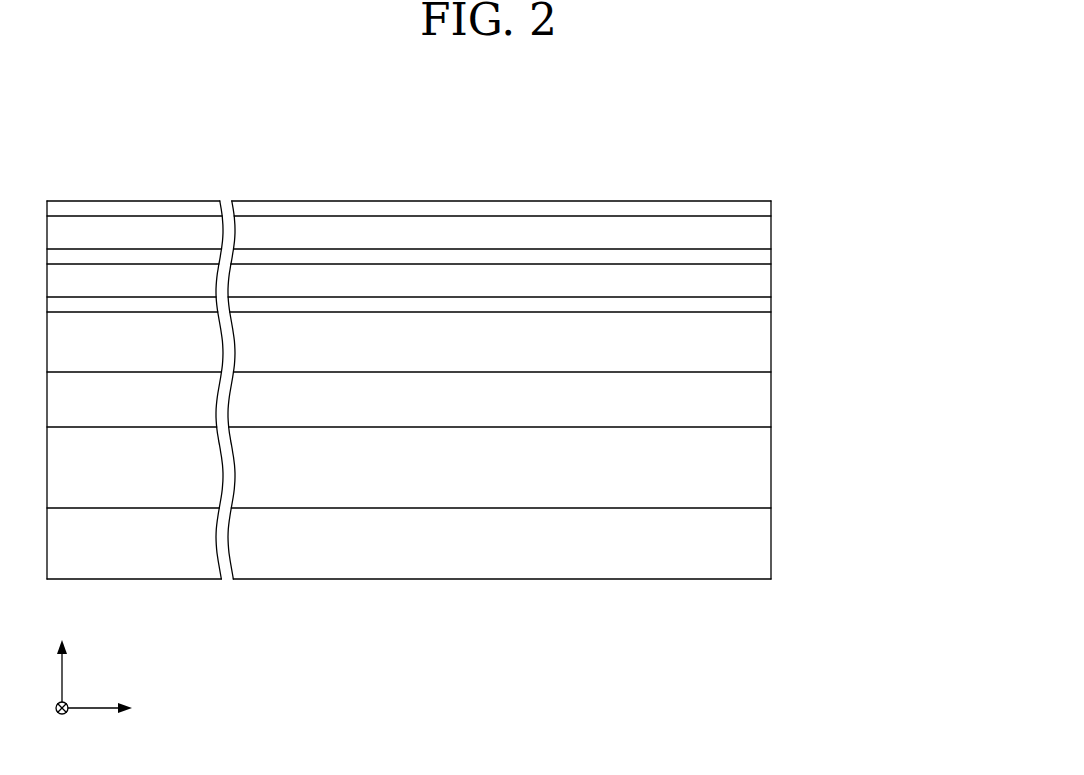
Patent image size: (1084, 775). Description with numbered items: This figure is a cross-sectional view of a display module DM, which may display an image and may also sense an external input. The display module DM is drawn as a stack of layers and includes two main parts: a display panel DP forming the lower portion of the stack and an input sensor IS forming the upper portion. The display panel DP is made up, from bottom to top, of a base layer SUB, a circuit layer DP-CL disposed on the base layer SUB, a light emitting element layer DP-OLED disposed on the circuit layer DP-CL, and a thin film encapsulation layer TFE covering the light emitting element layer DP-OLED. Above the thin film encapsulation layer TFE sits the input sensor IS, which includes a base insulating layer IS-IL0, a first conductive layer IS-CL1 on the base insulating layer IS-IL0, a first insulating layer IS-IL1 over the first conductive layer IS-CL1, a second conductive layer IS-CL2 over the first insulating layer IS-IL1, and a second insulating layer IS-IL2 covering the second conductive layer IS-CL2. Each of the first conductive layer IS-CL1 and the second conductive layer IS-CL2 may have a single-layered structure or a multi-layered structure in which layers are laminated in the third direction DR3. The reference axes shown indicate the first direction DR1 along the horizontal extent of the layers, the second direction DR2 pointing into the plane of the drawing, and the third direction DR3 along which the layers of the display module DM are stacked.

The display module DM is at (503, 326).
The input sensor IS is at (410, 195).
The base insulating layer IS-IL0 is at (773, 132).
The first conductive layer IS-CL1 is at (447, 273).
The first insulating layer IS-IL1 is at (538, 253).
The second conductive layer IS-CL2 is at (630, 223).
The second insulating layer IS-IL2 is at (723, 208).
The display panel DP is at (503, 445).
The thin film encapsulation layer TFE is at (758, 326).
The light emitting element layer DP-OLED is at (758, 384).
The circuit layer DP-CL is at (758, 451).
The base layer SUB is at (453, 543).
The first direction DR1 is at (120, 708).
The second direction DR2 is at (62, 724).
The third direction DR3 is at (62, 657).